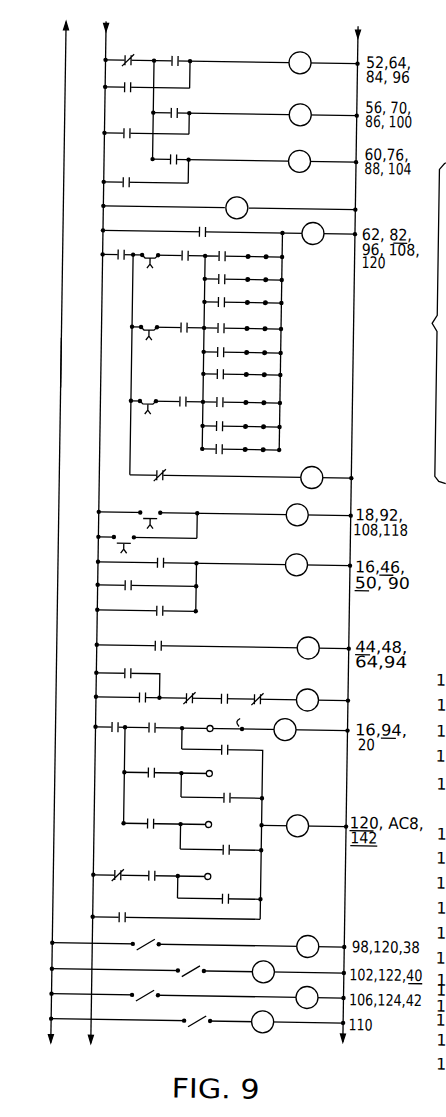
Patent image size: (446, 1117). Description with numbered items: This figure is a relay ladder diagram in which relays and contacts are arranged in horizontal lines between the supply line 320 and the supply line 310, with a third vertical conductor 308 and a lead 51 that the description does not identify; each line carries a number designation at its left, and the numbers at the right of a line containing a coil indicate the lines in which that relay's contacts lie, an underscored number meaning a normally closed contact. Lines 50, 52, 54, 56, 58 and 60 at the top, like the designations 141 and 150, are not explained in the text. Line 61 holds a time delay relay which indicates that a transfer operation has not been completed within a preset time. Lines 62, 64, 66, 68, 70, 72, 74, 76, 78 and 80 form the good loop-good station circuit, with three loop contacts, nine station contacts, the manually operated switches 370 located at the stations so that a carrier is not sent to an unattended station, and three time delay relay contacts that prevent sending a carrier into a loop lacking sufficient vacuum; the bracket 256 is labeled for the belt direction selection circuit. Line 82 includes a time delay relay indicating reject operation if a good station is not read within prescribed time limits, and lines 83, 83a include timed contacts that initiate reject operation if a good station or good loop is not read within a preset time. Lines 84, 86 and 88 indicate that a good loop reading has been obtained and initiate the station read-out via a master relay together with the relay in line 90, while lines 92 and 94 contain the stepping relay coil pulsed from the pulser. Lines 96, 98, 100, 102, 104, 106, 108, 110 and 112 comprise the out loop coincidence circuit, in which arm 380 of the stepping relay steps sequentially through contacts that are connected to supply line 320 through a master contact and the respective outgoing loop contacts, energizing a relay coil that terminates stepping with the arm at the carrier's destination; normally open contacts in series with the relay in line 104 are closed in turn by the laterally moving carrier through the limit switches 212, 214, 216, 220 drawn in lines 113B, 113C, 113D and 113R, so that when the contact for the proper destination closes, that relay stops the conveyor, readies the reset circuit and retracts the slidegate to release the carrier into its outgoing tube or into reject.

The supply line 308 is at (58, 533).
The supply line 320 is at (98, 533).
The supply line 310 is at (351, 535).
The supply conductor 51 is at (59, 361).
The ladder line 50 is at (203, 96).
The ladder line 52 is at (118, 80).
The ladder line 54 is at (202, 110).
The ladder line 56 is at (117, 126).
The ladder line 58 is at (201, 160).
The ladder line 60 is at (116, 174).
The line 61 is at (202, 205).
The line 62 is at (200, 227).
The line 64 is at (162, 355).
The line 66 is at (164, 271).
The line 68 is at (163, 294).
The line 70 is at (163, 327).
The line 72 is at (163, 344).
The line 74 is at (162, 366).
The line 76 is at (162, 400).
The line 78 is at (161, 418).
The line 80 is at (161, 441).
The line 82 is at (197, 470).
The line 83 is at (196, 515).
The line 83a is at (356, 467).
The line 84 is at (195, 577).
The line 86 is at (118, 578).
The line 88 is at (118, 603).
The line 90 is at (194, 638).
The line 92 is at (98, 674).
The line 94 is at (193, 691).
The line 96 is at (192, 764).
The line 98 is at (154, 824).
The line 100 is at (123, 773).
The line 102 is at (146, 790).
The line 104 is at (187, 826).
The line 106 is at (145, 842).
The line 108 is at (121, 876).
The line 110 is at (144, 891).
The line 112 is at (143, 911).
The line 113B is at (181, 936).
The line 113C is at (180, 963).
The line 113D is at (180, 988).
The line 113R is at (179, 1014).
The timer relay TRAL coil line 141 is at (308, 205).
The common conductor 150 is at (277, 278).
The belt direction selection circuit 256 is at (421, 322).
The manually operated switches 370 is at (262, 256).
The arm of stepping relay SR2 380 is at (220, 742).
The limit switch 212 is at (164, 941).
The limit switch 214 is at (199, 968).
The limit switch 216 is at (165, 995).
The limit switch 220 is at (202, 1020).